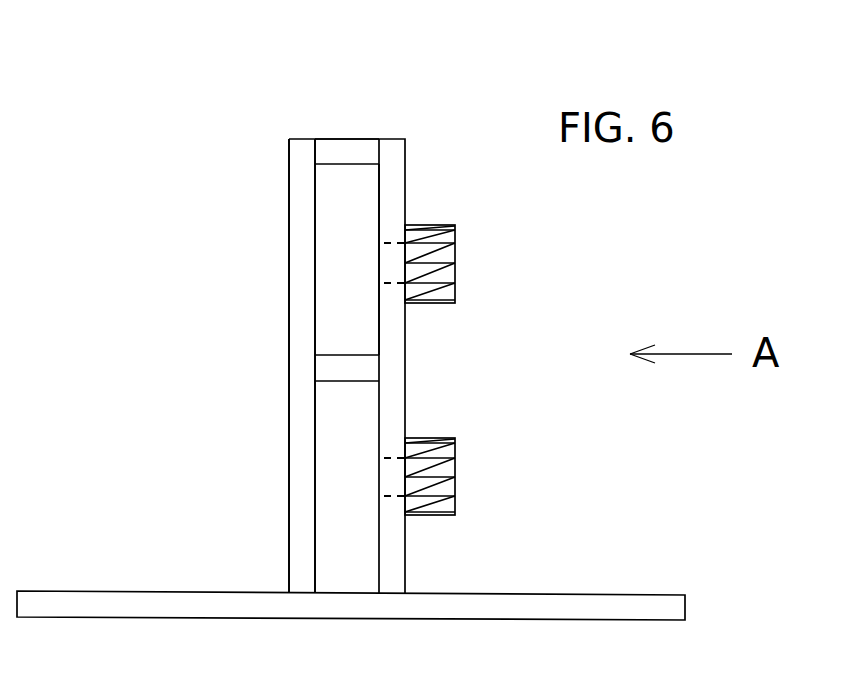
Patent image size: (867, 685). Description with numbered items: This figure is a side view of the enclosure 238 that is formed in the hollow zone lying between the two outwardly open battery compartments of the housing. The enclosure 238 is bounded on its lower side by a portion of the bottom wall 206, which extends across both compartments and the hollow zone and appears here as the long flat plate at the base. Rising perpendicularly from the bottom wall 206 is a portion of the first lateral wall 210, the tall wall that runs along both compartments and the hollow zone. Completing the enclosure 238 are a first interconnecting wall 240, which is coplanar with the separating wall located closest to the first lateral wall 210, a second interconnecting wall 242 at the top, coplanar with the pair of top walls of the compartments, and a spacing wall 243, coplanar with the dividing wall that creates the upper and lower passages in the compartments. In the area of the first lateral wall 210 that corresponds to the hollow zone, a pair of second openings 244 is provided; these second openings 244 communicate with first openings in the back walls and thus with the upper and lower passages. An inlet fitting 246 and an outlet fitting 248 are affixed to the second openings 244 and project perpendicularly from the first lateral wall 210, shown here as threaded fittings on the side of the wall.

The bottom wall 206 is at (607, 607).
The first lateral wall 210 is at (392, 417).
The enclosure 238 is at (210, 313).
The first interconnecting wall 240 is at (298, 397).
The second interconnecting wall 242 is at (340, 153).
The spacing wall 243 is at (348, 366).
The second openings 244 is at (393, 262).
The inlet fitting 246 is at (432, 472).
The outlet fitting 248 is at (427, 257).